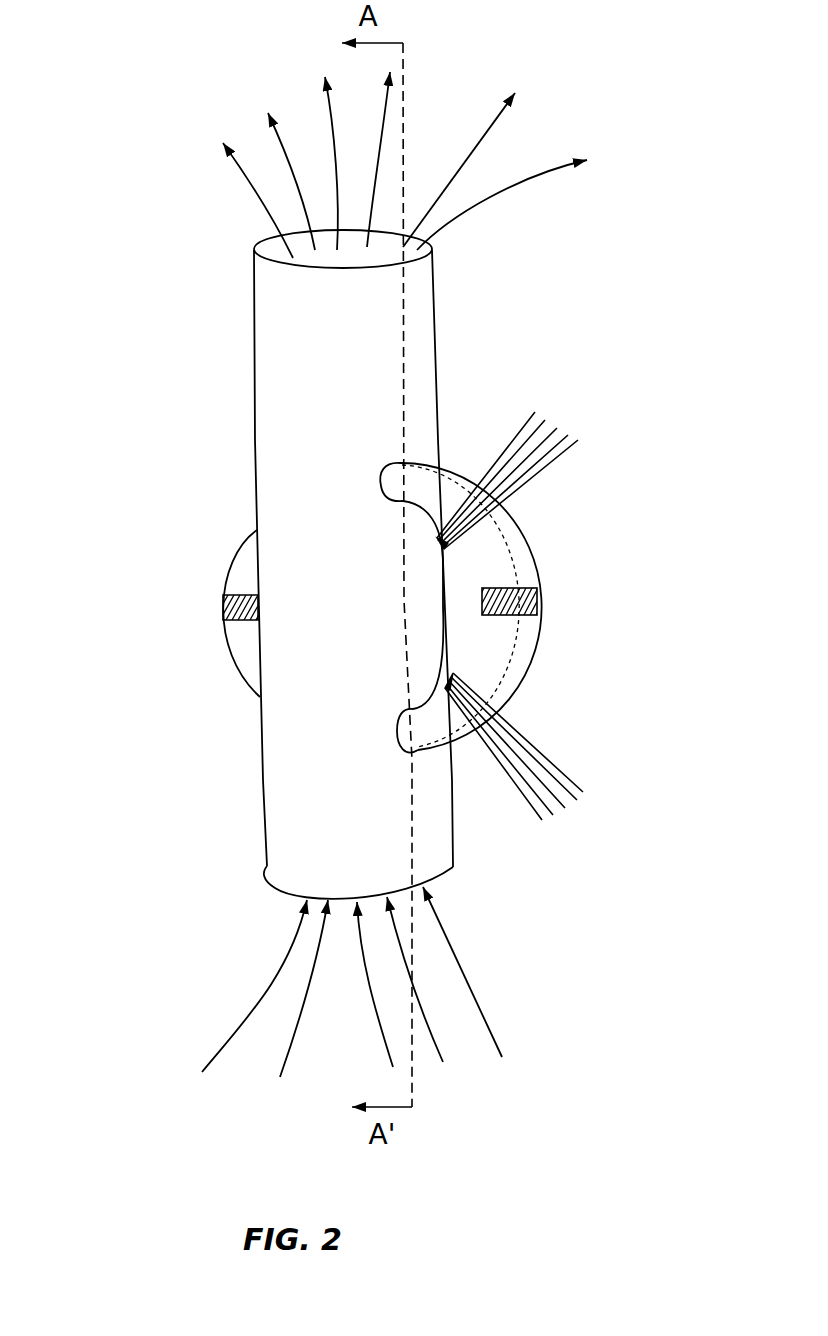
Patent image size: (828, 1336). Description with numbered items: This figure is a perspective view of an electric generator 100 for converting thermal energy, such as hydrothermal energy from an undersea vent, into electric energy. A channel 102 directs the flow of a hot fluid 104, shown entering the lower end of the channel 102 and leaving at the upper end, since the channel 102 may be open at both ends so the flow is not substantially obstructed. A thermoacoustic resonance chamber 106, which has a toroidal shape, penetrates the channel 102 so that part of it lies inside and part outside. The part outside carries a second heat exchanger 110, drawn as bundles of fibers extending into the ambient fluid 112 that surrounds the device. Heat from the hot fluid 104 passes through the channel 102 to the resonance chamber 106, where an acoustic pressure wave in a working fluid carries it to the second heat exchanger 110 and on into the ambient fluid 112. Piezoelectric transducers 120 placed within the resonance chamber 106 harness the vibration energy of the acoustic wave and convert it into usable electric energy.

The air treatment system 100 is at (128, 477).
The channel 102 is at (258, 313).
The fluid 104 is at (258, 188).
The thermoacoustic resonance chamber 106 is at (515, 540).
The second heat exchanger 110 is at (535, 410).
The ambient fluid 112 is at (653, 374).
The piezoelectric transducer 120 is at (537, 590).